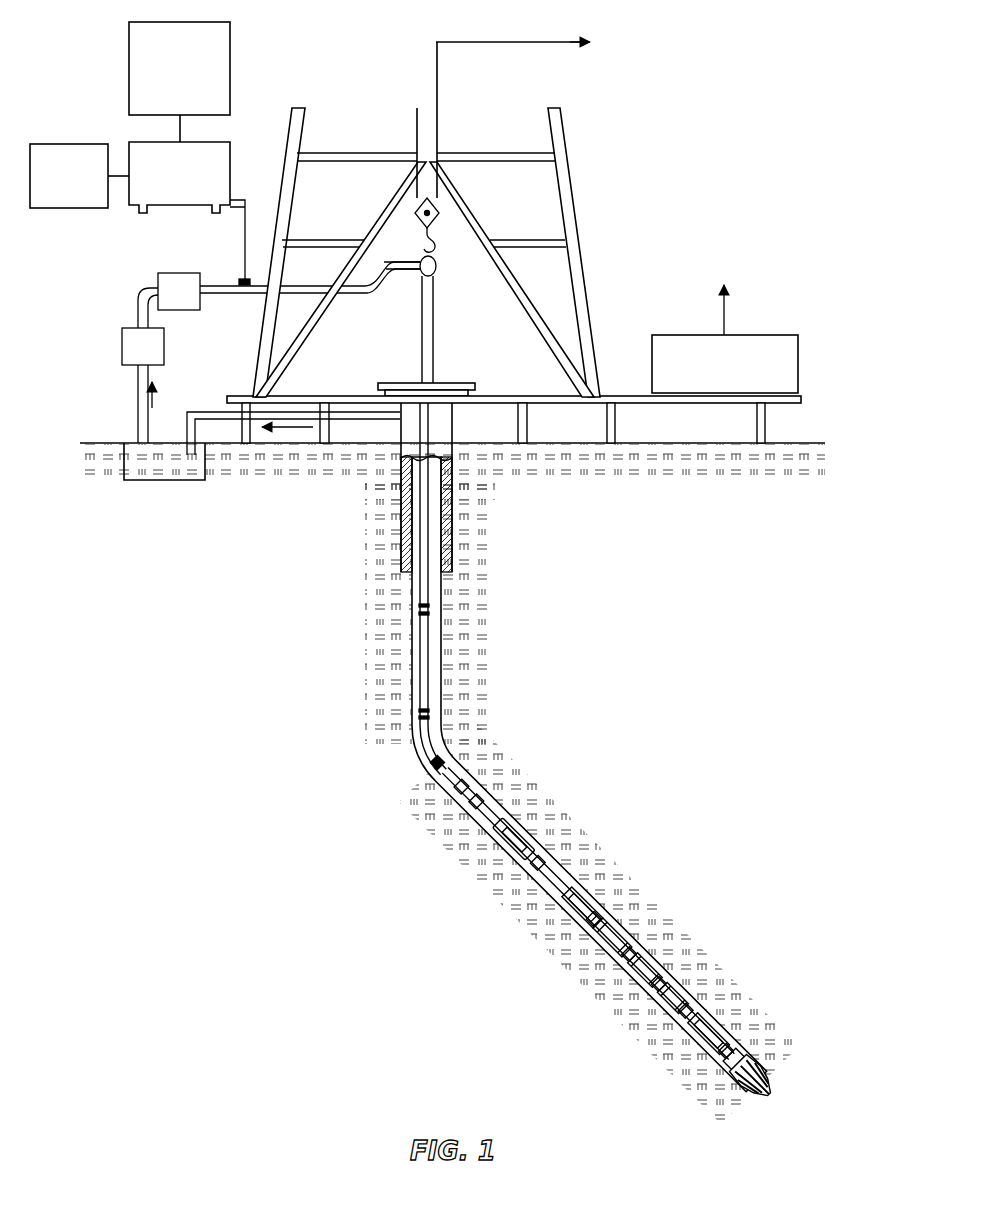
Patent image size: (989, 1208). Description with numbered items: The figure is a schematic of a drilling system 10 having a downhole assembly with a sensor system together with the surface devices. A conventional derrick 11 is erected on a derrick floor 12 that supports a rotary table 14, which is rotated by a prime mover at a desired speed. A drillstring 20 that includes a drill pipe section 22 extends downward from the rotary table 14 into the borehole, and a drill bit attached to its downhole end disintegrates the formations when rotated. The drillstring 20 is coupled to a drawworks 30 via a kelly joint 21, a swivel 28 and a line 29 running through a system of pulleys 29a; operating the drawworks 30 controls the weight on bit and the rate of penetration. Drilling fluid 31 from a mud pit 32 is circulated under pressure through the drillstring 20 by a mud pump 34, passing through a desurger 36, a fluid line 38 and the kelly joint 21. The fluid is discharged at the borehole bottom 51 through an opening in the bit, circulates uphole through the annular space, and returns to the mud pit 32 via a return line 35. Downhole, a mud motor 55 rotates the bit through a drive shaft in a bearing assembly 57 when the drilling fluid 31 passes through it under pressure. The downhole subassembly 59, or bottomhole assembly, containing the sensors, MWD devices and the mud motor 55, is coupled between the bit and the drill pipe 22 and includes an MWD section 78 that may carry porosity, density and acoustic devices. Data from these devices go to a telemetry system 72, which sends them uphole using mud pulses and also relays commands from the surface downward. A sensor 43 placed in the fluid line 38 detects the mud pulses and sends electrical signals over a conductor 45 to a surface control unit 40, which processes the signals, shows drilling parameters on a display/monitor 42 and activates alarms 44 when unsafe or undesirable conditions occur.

The drilling system 10 is at (345, 58).
The derrick 11 is at (580, 255).
The derrick floor 12 is at (600, 396).
The rotary table 14 is at (442, 380).
The drillstring 20 is at (441, 585).
The kelly joint 21 is at (435, 323).
The drill pipe section 22 is at (412, 637).
The swivel 28 is at (418, 280).
The line 29 is at (438, 133).
The system of pulleys 29a is at (440, 212).
The drawworks 30 is at (778, 335).
The drilling fluid 31 is at (128, 470).
The mud pit 32 is at (196, 480).
The mud pump 34 is at (122, 346).
The return line 35 is at (368, 417).
The desurger 36 is at (175, 273).
The fluid line 38 is at (255, 296).
The surface control unit 40 is at (150, 142).
The display/monitor 42 is at (185, 22).
The sensor 43 is at (244, 281).
The alarms 44 is at (87, 210).
The conductor 45 is at (237, 200).
The borehole bottom 51 is at (752, 1098).
The mud motor 55 is at (571, 863).
The bearing assembly 57 is at (694, 1048).
The downhole subassembly 59 is at (624, 782).
The telemetry system 72 is at (428, 705).
The MWD section 78 is at (601, 907).